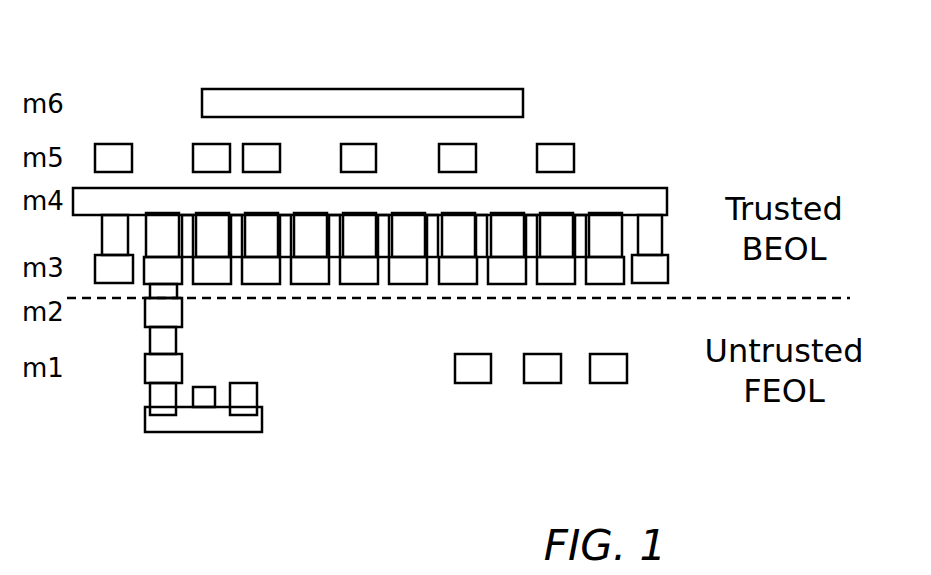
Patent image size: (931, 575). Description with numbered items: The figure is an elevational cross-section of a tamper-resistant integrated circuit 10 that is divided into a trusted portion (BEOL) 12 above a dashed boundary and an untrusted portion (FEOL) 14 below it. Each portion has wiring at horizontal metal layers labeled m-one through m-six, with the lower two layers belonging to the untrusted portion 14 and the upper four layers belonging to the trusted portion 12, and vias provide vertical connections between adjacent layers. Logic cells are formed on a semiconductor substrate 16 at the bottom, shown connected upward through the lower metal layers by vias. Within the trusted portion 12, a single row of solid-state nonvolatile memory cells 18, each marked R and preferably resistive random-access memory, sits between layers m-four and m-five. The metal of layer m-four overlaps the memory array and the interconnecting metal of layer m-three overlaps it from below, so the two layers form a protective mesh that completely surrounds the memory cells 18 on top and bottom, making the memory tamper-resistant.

The tamper-resistant integrated circuit 10 is at (129, 58).
The trusted portion (BEOL) 12 is at (710, 143).
The untrusted portion (FEOL) 14 is at (724, 444).
The semiconductor substrate 16 is at (193, 432).
The solid-state nonvolatile memory cells 18 is at (352, 212).